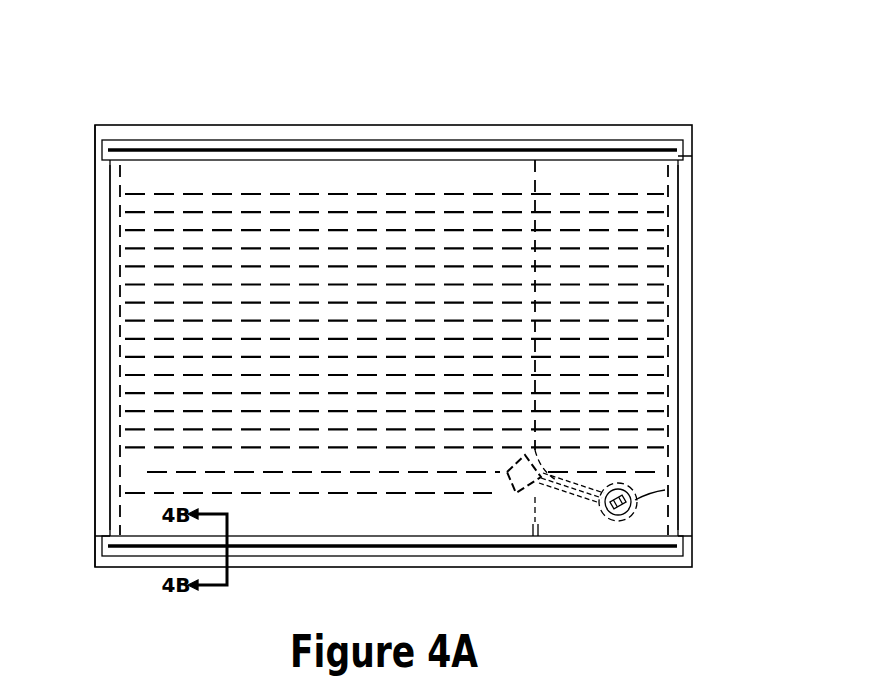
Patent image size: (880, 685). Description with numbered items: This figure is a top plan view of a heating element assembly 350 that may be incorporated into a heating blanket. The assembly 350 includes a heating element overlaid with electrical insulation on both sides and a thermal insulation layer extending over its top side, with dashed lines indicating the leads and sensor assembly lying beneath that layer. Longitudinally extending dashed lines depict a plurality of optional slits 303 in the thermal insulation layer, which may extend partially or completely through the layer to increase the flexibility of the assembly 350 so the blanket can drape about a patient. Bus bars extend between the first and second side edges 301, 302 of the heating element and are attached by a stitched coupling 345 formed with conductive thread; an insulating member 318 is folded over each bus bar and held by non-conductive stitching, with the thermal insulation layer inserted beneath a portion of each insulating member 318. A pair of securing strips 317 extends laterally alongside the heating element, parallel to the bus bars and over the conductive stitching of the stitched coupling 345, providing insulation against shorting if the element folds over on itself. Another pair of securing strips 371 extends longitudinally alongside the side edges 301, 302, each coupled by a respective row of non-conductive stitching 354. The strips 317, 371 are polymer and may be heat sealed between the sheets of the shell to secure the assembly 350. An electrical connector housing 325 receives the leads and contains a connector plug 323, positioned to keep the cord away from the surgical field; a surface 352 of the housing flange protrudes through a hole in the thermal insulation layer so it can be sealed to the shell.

The heating element assembly 350 is at (389, 84).
The second side edge 302 is at (677, 182).
The first side edge 301 is at (106, 508).
The securing strip 371 is at (108, 480).
The row of non-conductive stitching 354 is at (118, 440).
The securing strip 317 is at (157, 131).
The insulating member 318 is at (213, 147).
The stitched coupling 345 is at (502, 151).
The slits 303 is at (306, 192).
The connector plug 323 is at (665, 490).
The surface 352 is at (608, 515).
The electrical connector housing 325 is at (617, 512).